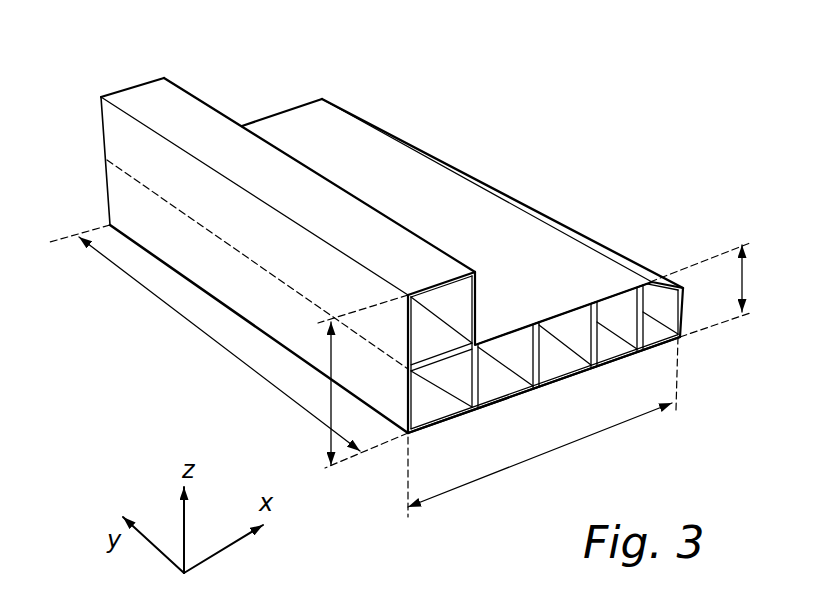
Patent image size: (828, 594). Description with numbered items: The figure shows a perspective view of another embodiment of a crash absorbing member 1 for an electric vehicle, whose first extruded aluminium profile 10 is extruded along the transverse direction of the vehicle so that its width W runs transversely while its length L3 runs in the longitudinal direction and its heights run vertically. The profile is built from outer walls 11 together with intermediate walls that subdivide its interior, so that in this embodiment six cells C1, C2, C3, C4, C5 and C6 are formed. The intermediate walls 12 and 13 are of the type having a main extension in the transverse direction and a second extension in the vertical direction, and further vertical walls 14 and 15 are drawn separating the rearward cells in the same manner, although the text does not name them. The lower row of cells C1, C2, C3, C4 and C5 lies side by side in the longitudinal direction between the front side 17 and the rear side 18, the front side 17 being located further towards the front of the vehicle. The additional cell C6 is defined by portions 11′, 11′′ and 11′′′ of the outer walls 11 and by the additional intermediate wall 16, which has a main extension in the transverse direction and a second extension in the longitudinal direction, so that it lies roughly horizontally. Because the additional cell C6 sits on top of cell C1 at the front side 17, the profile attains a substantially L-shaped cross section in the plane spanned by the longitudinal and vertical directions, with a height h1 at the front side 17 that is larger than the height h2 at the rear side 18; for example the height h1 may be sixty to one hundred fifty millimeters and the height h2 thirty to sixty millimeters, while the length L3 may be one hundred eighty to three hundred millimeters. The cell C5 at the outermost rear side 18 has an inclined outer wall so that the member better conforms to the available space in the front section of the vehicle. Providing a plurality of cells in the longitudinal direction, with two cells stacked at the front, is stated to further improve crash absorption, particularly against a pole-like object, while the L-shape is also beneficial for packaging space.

The crash absorbing member 1 is at (545, 292).
The first extruded aluminium profile 10 is at (545, 352).
The outer walls 11 is at (445, 200).
The outer wall portion 11′ is at (182, 183).
The outer wall portion 11′′ is at (138, 97).
The outer wall portion 11′′′ is at (480, 282).
The intermediate wall 12 is at (470, 413).
The intermediate wall 13 is at (530, 352).
The intermediate vertical wall 14 is at (596, 312).
The intermediate vertical wall 15 is at (647, 303).
The additional intermediate wall 16 is at (437, 347).
The front side 17 is at (195, 257).
The rear side 18 is at (375, 123).
The cell C1 is at (437, 413).
The cell C2 is at (507, 360).
The cell C3 is at (577, 368).
The cell C4 is at (620, 352).
The cell C5 is at (662, 313).
The additional cell C6 is at (443, 302).
The width W is at (205, 338).
The height at the front side h1 is at (331, 406).
The height at the rear side h2 is at (715, 290).
The length L3 is at (543, 427).